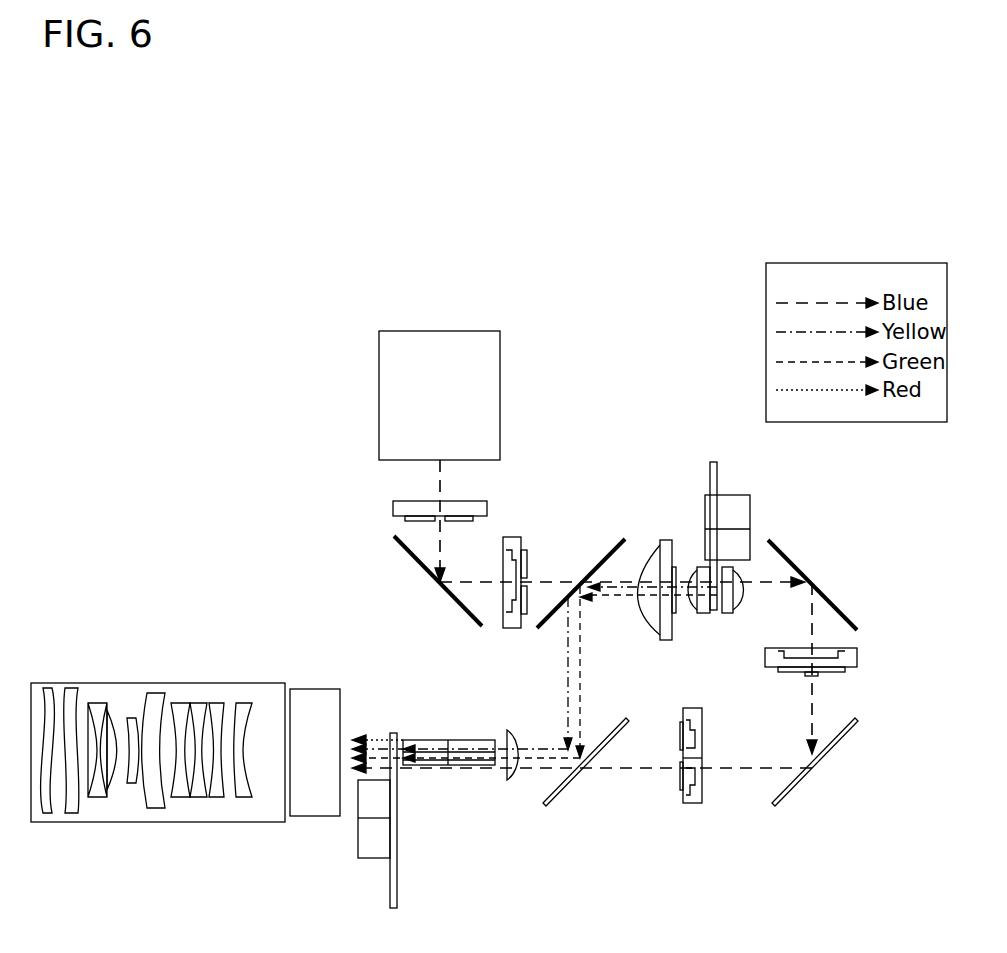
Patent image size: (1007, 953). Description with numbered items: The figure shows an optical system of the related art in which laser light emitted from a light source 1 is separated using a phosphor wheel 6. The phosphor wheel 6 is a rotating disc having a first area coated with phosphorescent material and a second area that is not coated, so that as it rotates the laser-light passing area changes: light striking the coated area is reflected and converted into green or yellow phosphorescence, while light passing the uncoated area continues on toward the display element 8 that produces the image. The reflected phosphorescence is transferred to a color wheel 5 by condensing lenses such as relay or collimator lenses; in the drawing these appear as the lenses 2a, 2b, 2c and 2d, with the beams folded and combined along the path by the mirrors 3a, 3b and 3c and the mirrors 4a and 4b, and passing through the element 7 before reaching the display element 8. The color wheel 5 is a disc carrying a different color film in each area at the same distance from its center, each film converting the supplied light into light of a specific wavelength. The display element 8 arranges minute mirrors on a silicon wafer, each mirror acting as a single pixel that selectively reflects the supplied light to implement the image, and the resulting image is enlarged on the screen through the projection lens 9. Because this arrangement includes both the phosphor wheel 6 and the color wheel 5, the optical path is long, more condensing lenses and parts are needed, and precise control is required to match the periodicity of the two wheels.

The light source 1 is at (500, 393).
The lens 2a is at (527, 560).
The lens group 2b is at (728, 610).
The lens 2c is at (852, 655).
The lens 2d is at (702, 740).
The mirror 3a is at (415, 575).
The mirror 3b is at (790, 555).
The mirror 3c is at (845, 735).
The dichroic mirror 4a is at (612, 545).
The dichroic mirror 4b is at (565, 785).
The color wheel 5 is at (397, 875).
The phosphor wheel 6 is at (710, 472).
The light tunnel 7 is at (432, 740).
The display element 8 is at (315, 689).
The projection lens 9 is at (157, 683).